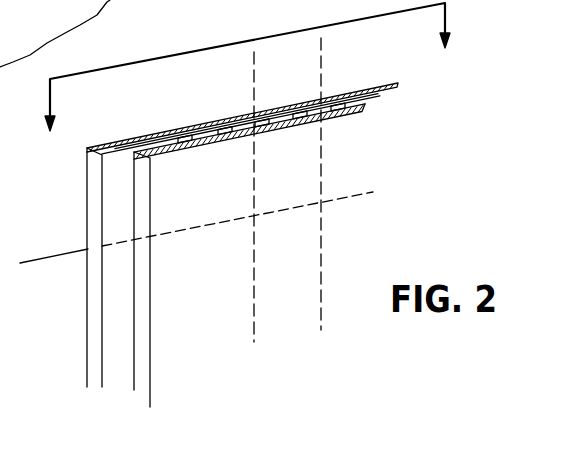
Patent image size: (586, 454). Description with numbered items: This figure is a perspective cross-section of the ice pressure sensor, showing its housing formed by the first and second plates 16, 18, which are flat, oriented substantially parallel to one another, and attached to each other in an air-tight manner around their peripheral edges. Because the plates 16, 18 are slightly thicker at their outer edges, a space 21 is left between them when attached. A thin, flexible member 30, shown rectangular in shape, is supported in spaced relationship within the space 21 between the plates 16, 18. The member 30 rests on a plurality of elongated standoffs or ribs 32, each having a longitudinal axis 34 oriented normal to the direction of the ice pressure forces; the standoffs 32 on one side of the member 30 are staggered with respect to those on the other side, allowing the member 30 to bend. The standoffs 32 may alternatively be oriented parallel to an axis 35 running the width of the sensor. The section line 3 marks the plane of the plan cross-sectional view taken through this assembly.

The section line 3- 3 is at (249, 85).
The first plate 16 is at (343, 118).
The second plate 18 is at (188, 128).
The space 21 is at (278, 113).
The flexible member 30 is at (340, 106).
The standoffs 32 is at (246, 122).
The longitudinal axis 34 is at (322, 296).
The axis 35 is at (348, 196).